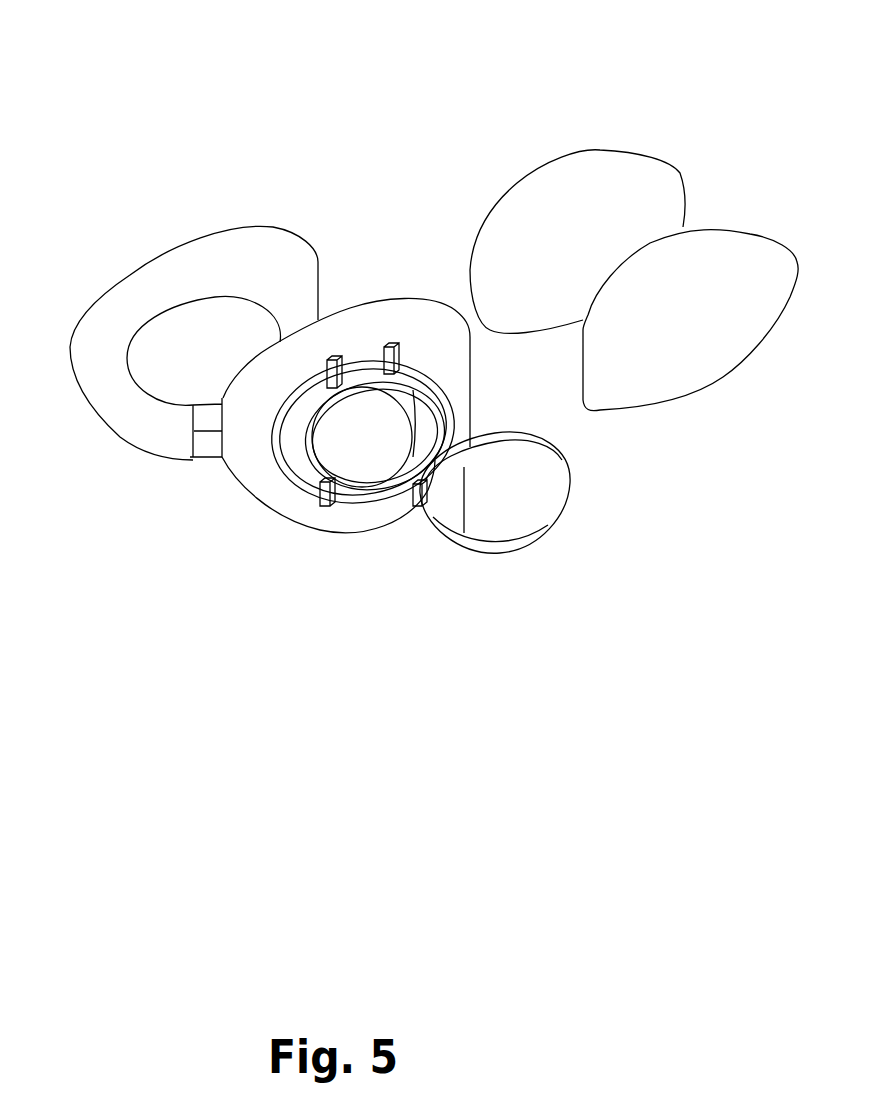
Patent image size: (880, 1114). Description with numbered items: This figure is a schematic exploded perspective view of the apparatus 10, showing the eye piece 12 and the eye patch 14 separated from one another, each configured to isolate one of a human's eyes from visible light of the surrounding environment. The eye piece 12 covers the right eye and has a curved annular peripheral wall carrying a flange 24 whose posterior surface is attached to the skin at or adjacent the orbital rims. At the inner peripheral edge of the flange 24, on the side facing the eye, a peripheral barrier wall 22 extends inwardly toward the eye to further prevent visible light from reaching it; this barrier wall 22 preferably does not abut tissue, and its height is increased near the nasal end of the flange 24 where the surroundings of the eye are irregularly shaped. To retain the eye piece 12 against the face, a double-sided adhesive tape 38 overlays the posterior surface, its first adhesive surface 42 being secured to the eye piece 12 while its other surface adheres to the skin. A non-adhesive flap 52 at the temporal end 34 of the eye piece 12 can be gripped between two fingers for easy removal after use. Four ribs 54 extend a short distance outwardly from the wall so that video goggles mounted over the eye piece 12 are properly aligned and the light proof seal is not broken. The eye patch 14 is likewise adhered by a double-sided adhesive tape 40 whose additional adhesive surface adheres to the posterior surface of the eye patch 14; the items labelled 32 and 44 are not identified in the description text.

The apparatus 10 is at (370, 80).
The eye piece 12 is at (313, 533).
The eye patch 14 is at (676, 326).
The peripheral barrier wall 22 is at (413, 430).
The flange 24 is at (412, 339).
The pad 32 is at (498, 504).
The temporal end 34 is at (263, 467).
The adhesive tape 38 is at (204, 253).
The double-sided adhesive tape 40 is at (569, 246).
The first adhesive surface 42 is at (104, 404).
The inner surface 44 is at (513, 299).
The non-adhesive flap 52 is at (199, 427).
The ribs 54 is at (387, 510).